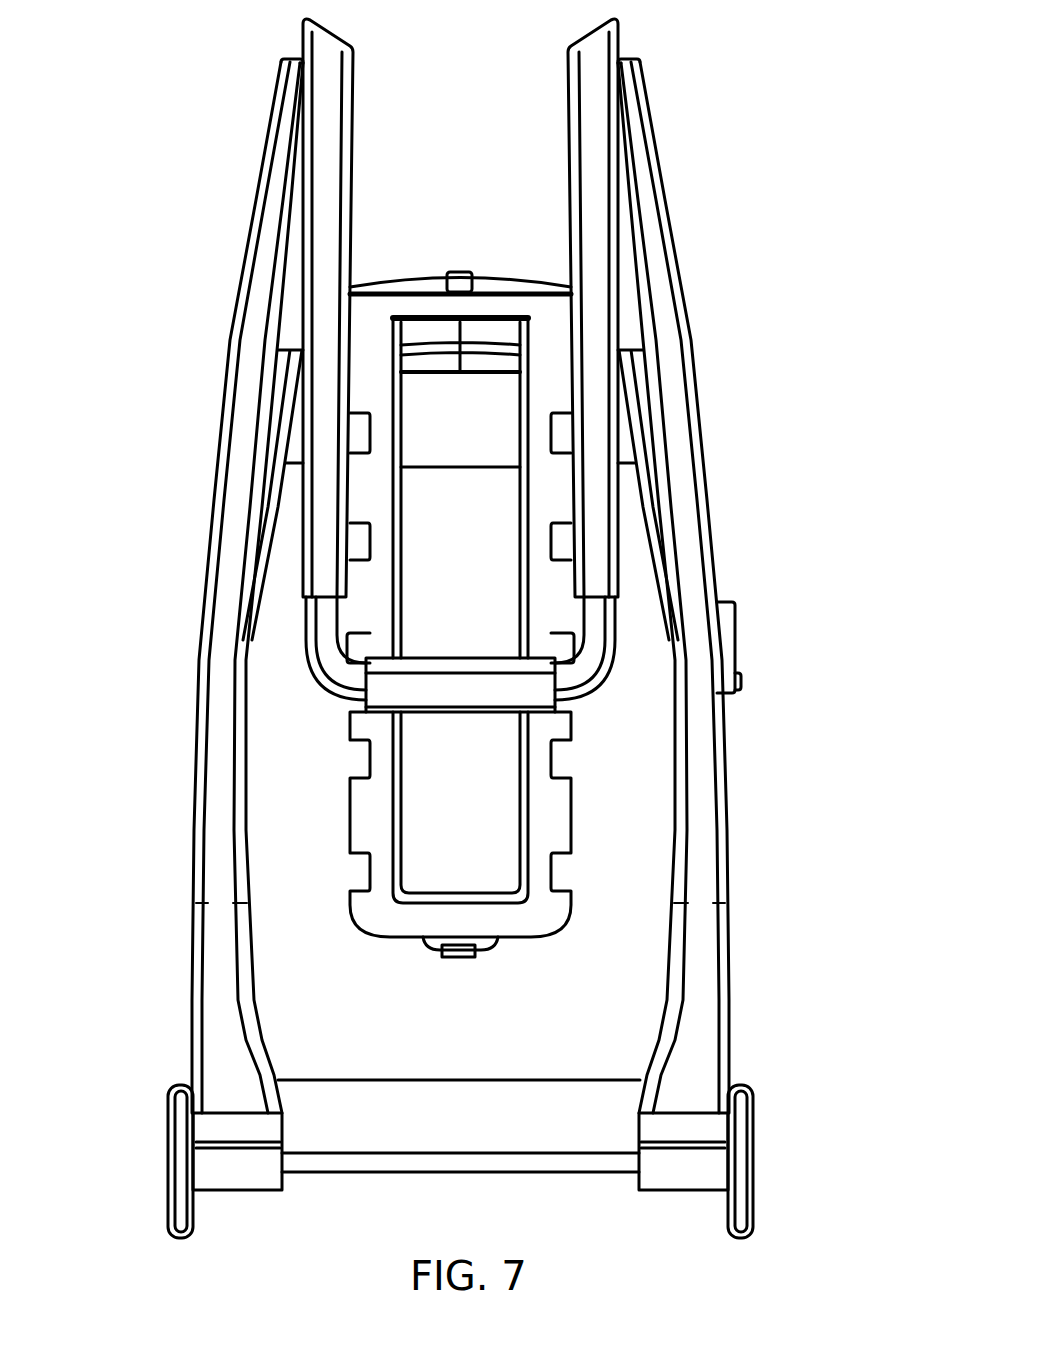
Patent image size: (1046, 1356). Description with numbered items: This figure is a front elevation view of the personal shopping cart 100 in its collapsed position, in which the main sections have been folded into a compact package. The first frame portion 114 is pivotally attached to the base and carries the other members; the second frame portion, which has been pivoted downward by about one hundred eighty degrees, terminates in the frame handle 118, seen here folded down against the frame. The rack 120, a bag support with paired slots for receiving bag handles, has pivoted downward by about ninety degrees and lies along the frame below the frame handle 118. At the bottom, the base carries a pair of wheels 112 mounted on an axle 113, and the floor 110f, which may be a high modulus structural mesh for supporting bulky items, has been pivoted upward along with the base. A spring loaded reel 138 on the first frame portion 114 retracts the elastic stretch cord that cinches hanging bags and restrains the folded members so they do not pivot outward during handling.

The personal shopping cart 100 is at (892, 451).
The floor 110f is at (288, 937).
The wheels 112 is at (747, 1147).
The axle 113 is at (398, 1173).
The first frame portion 114 is at (730, 960).
The frame handle 118 is at (556, 690).
The rack 120 is at (512, 950).
The spring loaded reel 138 is at (736, 640).